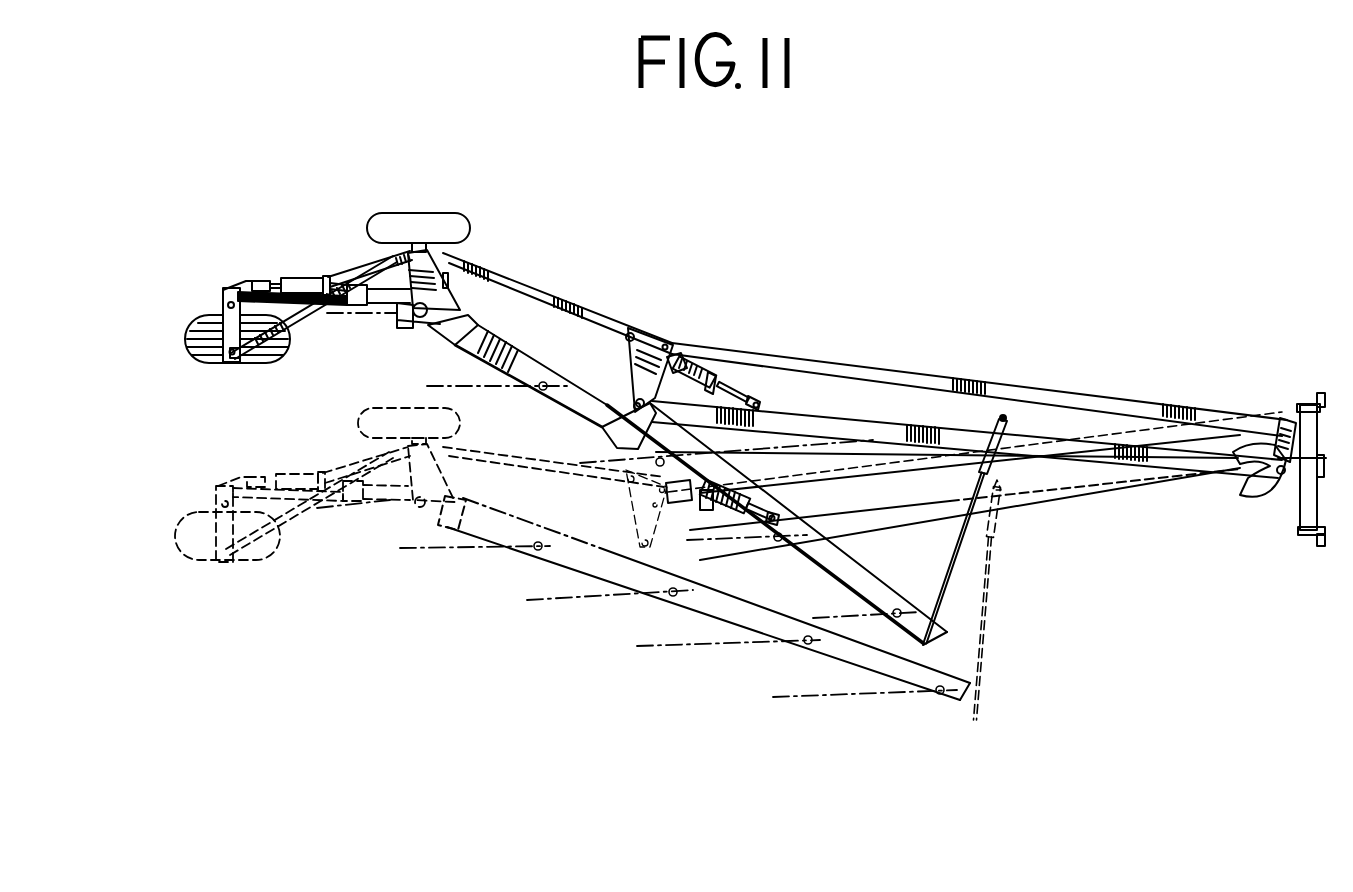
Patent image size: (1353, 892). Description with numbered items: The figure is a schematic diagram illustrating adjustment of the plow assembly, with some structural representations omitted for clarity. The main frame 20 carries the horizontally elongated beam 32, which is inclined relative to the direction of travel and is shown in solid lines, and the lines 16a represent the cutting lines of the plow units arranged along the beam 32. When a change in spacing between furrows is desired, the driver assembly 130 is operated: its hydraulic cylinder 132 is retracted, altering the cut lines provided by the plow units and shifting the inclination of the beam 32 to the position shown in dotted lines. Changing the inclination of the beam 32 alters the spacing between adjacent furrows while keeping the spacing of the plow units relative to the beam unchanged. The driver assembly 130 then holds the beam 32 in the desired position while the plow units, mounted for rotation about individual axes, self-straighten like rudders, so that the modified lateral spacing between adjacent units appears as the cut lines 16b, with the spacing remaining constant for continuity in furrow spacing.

The cutting lines 16a is at (362, 316).
The cut lines 16b is at (355, 507).
The main frame 20 is at (872, 562).
The elongated beam 32 is at (562, 350).
The driver assembly 130 is at (772, 393).
The hydraulic cylinder 132 is at (737, 386).